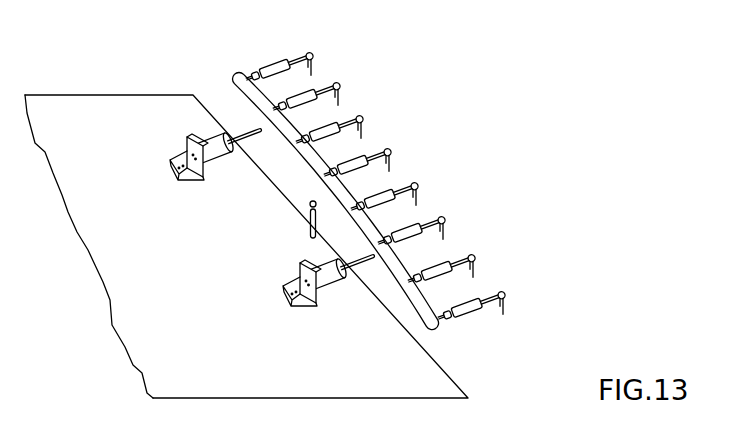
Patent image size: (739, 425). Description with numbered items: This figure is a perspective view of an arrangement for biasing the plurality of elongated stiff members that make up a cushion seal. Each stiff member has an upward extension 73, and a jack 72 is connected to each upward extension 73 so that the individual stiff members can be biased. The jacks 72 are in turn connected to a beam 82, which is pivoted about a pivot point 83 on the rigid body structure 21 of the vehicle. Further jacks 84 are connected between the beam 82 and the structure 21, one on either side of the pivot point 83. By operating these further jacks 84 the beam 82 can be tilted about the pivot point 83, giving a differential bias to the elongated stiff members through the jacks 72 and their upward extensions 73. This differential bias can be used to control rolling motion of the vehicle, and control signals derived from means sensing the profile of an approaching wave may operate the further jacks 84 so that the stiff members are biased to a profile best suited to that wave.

The rigid body structure 21 is at (168, 265).
The jacks 72 is at (268, 70).
The upward extension 73 is at (362, 128).
The beam 82 is at (442, 330).
The pivot point 83 is at (310, 227).
The further jacks 84 is at (210, 137).